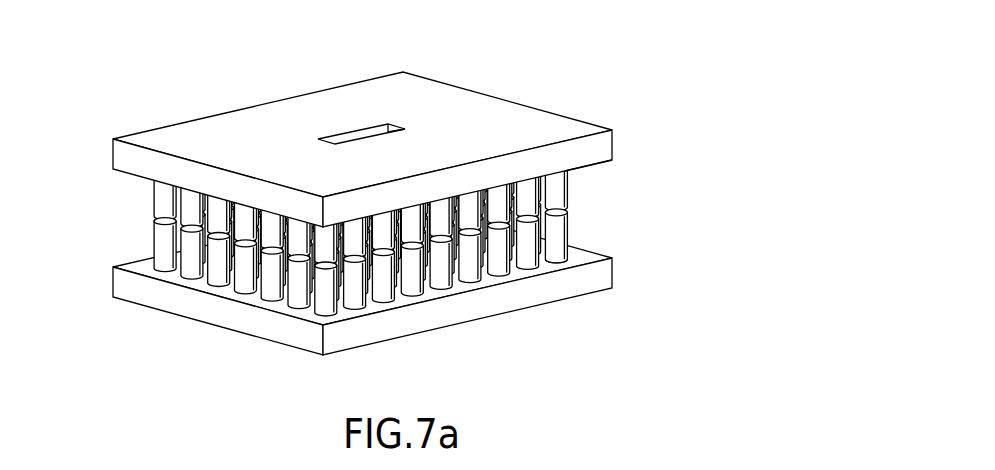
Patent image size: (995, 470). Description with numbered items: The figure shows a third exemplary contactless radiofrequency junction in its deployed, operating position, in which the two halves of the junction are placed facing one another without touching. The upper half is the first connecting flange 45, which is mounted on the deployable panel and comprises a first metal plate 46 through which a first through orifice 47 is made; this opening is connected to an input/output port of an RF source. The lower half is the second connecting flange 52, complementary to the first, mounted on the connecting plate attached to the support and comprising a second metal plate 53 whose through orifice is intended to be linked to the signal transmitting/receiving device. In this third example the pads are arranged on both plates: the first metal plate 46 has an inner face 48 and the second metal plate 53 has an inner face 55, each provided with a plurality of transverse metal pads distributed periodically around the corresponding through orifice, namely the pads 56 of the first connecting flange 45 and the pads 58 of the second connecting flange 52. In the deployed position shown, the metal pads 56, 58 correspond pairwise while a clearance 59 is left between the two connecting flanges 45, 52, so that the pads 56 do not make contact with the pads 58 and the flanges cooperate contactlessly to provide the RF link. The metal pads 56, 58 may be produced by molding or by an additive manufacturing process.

The first connecting flange 45 is at (489, 80).
The first metal plate 46 is at (545, 112).
The first through orifice 47 is at (360, 142).
The inner face of the first metal plate 48 is at (597, 171).
The second connecting flange 52 is at (431, 345).
The second metal plate 53 is at (528, 308).
The inner face of the second metal plate 55 is at (556, 263).
The metal pads of the first connecting flange 56 is at (562, 190).
The metal pads of the second connecting flange 58 is at (562, 230).
The clearance 59 is at (153, 222).